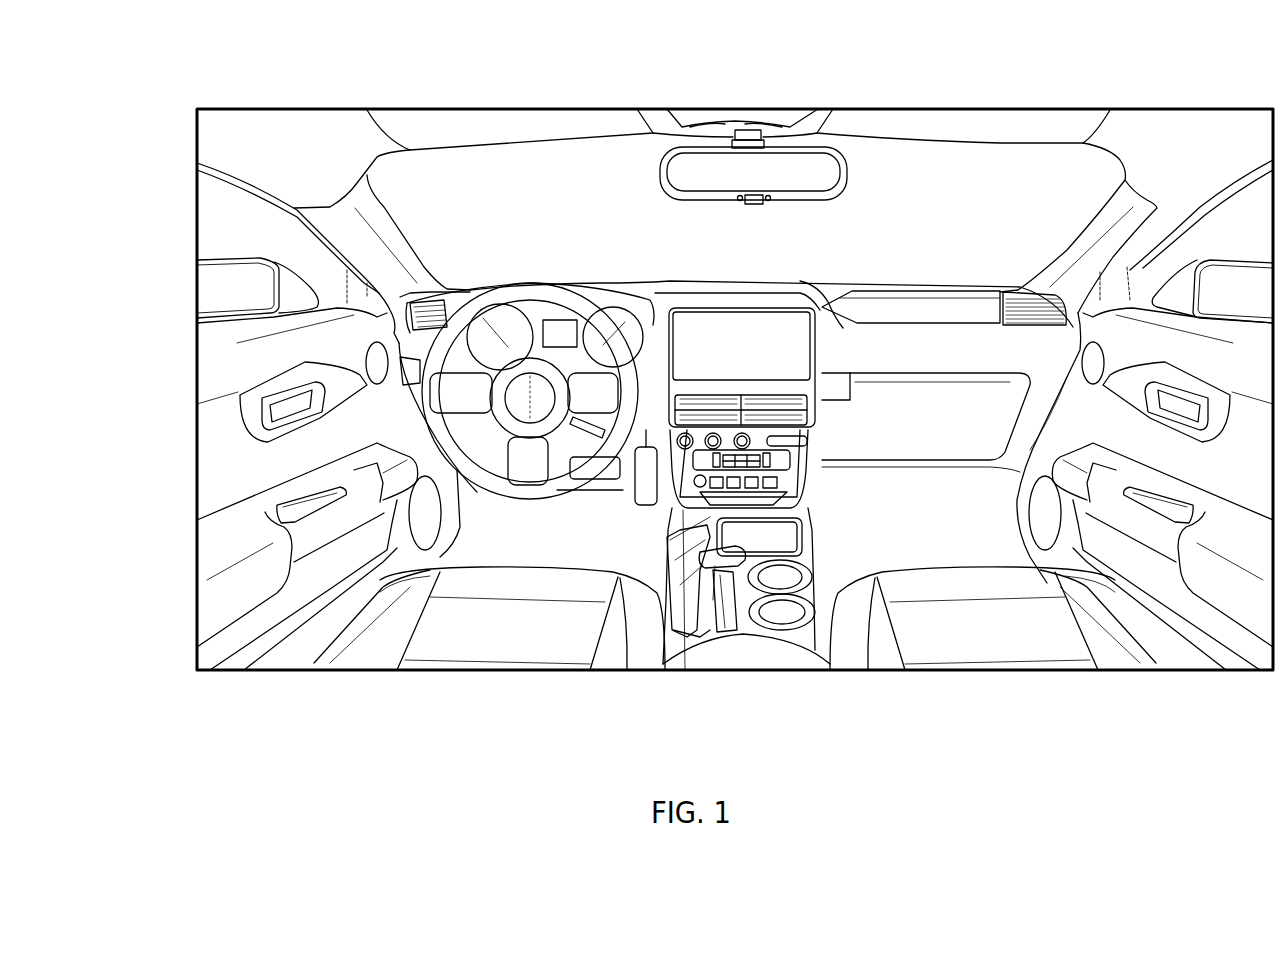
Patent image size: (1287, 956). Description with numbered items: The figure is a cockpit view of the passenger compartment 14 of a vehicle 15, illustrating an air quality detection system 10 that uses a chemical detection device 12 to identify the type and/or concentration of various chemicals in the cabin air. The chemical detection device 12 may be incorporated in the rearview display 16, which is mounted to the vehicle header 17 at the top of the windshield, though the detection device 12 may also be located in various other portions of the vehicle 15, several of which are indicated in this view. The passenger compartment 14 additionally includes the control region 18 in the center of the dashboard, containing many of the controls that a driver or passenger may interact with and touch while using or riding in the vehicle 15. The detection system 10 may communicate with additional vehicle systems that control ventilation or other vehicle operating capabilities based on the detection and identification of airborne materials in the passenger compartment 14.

The air quality detection system 10 is at (595, 113).
The chemical detection device 12 is at (798, 290).
The passenger compartment 14 is at (252, 126).
The vehicle 15 is at (1147, 109).
The rearview display 16 is at (690, 180).
The vehicle header 17 is at (768, 118).
The control region 18 is at (722, 317).